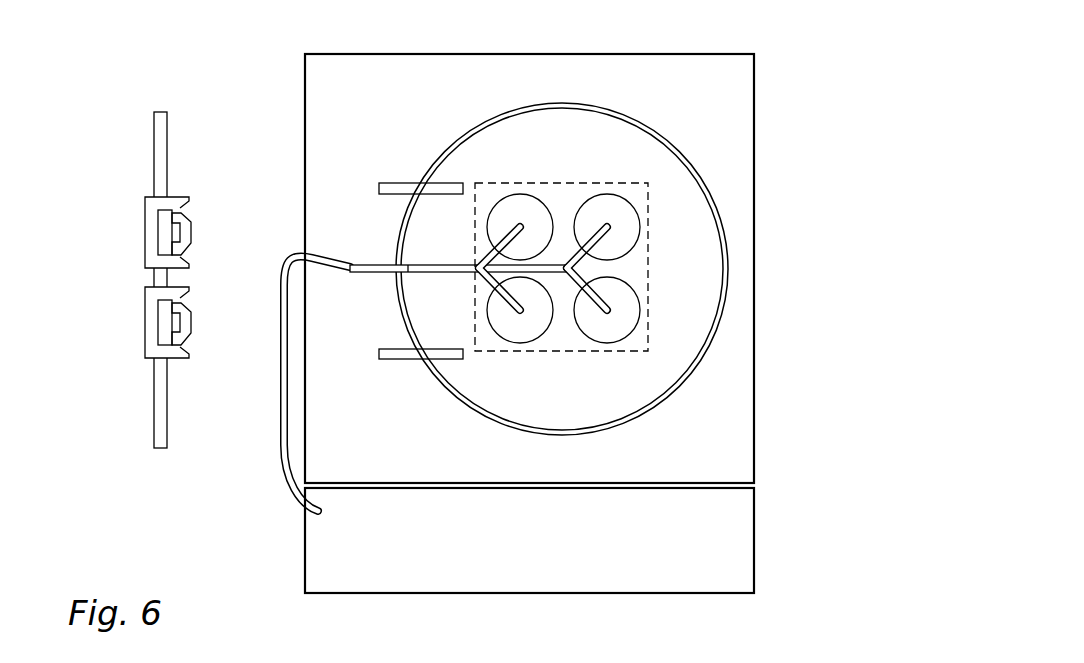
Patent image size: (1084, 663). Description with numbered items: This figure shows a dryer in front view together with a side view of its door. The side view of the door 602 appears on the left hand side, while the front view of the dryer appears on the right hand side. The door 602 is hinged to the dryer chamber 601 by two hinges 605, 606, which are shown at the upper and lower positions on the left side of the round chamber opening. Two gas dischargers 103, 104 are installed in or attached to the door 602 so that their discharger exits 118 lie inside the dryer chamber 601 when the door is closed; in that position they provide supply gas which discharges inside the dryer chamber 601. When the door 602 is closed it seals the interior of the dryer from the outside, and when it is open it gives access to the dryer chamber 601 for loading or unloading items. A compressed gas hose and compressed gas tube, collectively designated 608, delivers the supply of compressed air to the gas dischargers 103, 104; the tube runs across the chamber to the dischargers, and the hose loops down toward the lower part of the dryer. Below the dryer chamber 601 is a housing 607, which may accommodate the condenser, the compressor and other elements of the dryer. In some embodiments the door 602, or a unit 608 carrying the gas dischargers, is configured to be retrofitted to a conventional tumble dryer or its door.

The dryer chamber 601 is at (670, 54).
The door 602 is at (154, 137).
The hinge 605 is at (404, 183).
The hinge 606 is at (390, 349).
The housing 607 is at (755, 553).
The compressed gas hose and compressed gas tube 608 is at (284, 453).
The gas discharger 103 is at (145, 247).
The gas discharger 104 is at (145, 335).
The discharger exit 118 is at (210, 210).